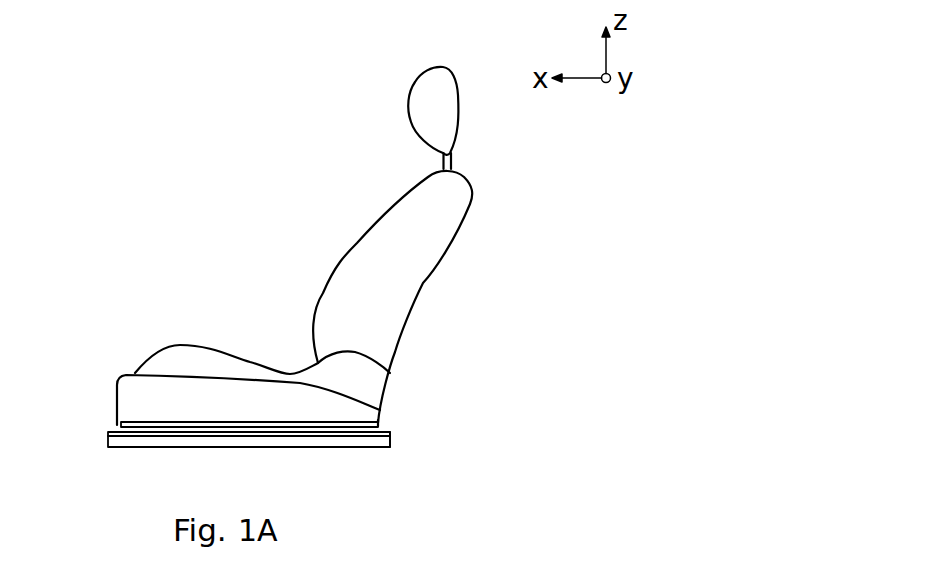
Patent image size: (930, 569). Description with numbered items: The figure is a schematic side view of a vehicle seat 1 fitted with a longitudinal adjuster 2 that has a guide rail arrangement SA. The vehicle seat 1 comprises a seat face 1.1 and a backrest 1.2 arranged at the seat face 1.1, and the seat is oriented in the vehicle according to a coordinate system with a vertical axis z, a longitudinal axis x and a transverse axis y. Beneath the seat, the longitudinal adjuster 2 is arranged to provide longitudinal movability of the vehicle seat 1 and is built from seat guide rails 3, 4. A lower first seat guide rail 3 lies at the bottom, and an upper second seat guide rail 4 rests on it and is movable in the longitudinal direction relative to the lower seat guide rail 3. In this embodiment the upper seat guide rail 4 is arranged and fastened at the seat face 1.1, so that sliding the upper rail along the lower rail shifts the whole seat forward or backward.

The vehicle seat 1 is at (254, 220).
The seat face 1.1 is at (163, 362).
The backrest 1.2 is at (397, 278).
The longitudinal adjuster 2 is at (396, 420).
The lower first seat guide rail 3 is at (108, 440).
The upper second seat guide rail 4 is at (123, 428).
The guide rail arrangement SA is at (407, 440).